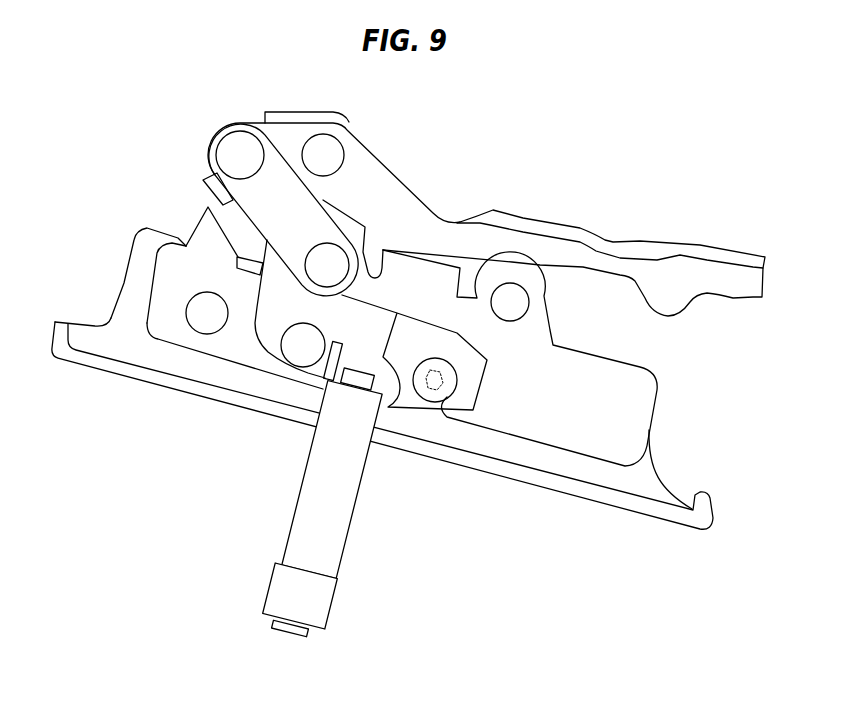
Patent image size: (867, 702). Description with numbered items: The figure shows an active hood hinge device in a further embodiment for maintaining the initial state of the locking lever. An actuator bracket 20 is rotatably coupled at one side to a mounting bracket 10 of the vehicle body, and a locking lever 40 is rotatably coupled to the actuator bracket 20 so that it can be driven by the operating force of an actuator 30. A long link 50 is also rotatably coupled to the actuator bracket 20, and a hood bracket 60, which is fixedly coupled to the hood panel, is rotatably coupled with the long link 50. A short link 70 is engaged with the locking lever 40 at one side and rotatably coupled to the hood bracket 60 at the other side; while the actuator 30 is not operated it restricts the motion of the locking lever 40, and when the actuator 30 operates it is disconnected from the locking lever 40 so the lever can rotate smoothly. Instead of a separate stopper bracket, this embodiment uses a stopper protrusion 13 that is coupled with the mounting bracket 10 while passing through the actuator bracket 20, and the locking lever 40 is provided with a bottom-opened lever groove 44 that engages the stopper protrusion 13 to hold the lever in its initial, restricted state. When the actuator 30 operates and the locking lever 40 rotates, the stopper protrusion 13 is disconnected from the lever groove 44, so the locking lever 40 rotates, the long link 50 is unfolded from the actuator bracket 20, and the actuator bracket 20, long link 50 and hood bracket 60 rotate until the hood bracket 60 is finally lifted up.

The mounting bracket 10 is at (553, 463).
The stopper protrusion 13 is at (433, 388).
The actuator bracket 20 is at (233, 347).
The actuator 30 is at (297, 550).
The locking lever 40 is at (368, 327).
The lever groove 44 is at (458, 395).
The long link 50 is at (483, 270).
The hood bracket 60 is at (583, 247).
The short link 70 is at (273, 212).